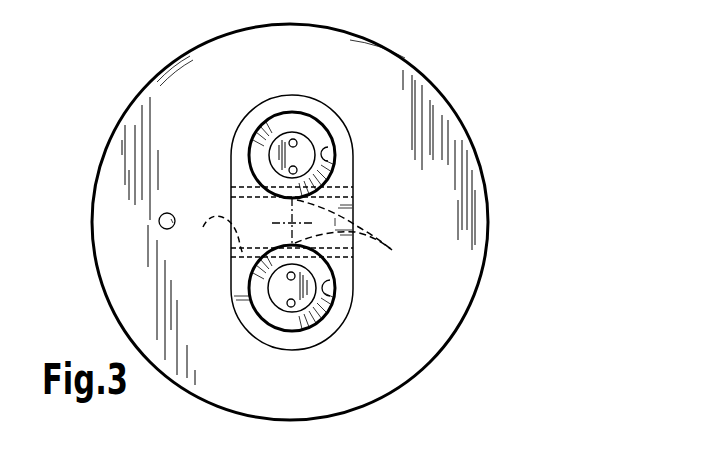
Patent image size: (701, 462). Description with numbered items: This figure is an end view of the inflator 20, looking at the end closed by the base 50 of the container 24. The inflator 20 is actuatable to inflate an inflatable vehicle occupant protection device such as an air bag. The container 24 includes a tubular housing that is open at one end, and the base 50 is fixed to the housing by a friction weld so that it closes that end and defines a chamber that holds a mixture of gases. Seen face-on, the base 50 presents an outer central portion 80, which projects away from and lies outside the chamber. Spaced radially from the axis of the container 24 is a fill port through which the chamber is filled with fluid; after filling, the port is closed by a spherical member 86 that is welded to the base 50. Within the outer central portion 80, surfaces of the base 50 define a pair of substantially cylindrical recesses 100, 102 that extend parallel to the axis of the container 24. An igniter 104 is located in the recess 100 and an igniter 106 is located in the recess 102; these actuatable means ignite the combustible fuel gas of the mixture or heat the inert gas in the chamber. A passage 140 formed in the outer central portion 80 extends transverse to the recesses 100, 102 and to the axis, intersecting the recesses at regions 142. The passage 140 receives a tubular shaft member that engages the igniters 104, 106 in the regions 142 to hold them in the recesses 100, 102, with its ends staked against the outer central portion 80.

The inflator 20 is at (527, 120).
The container 24 is at (455, 90).
The base 50 is at (382, 46).
The outer central portion 80 is at (346, 178).
The spherical member 86 is at (170, 212).
The recess 100 is at (330, 149).
The recess 102 is at (334, 292).
The igniter 104 is at (296, 108).
The igniter 106 is at (292, 335).
The passage 140 is at (210, 236).
The regions 142 is at (355, 239).